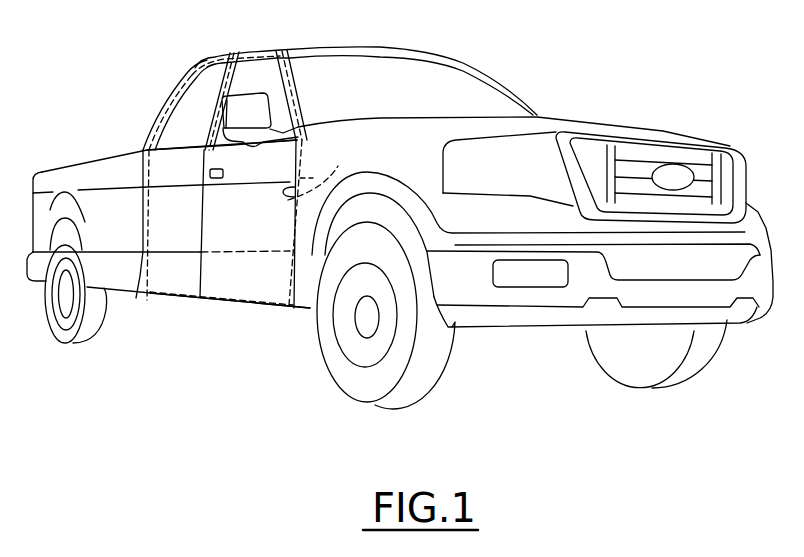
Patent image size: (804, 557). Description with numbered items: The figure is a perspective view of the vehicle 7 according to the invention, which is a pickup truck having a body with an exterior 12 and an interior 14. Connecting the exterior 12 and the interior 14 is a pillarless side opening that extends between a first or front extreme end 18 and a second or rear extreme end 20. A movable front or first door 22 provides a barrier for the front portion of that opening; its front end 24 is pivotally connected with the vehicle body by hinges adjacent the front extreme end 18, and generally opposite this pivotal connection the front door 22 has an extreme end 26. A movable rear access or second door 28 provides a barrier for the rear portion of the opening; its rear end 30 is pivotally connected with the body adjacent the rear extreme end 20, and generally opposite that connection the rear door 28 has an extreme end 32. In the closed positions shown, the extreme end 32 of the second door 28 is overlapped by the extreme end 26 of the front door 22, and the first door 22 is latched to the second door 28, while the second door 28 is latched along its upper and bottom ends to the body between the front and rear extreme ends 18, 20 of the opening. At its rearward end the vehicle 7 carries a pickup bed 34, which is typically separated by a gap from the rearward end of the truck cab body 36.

The vehicle 7 is at (172, 31).
The exterior 12 is at (425, 160).
The interior 14 is at (396, 59).
The front extreme end 18 is at (320, 171).
The rear extreme end 20 is at (147, 228).
The front door 22 is at (241, 272).
The front end 24 is at (282, 268).
The extreme end 26 is at (211, 123).
The rear access door 28 is at (183, 243).
The rear end 30 is at (165, 240).
The extreme end 32 is at (197, 262).
The pickup bed 34 is at (97, 167).
The truck cab body 36 is at (312, 46).